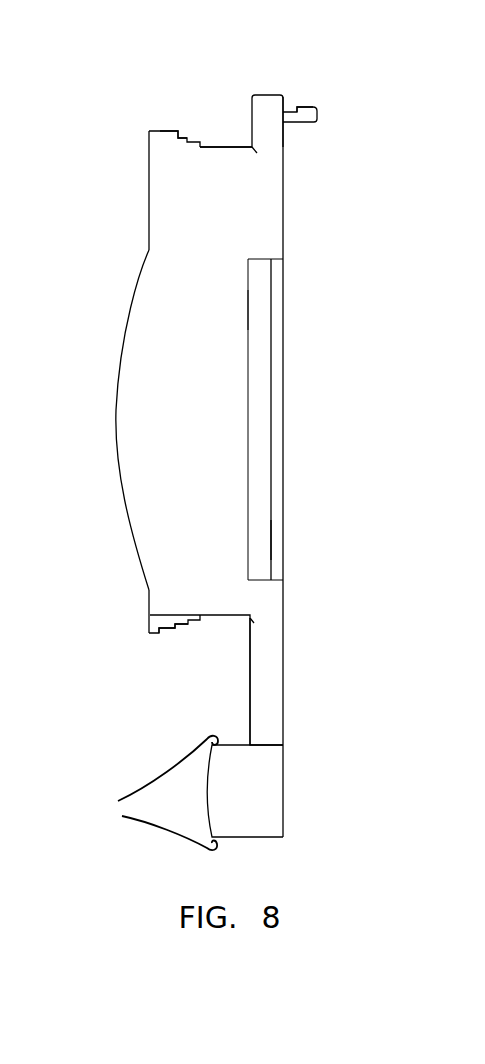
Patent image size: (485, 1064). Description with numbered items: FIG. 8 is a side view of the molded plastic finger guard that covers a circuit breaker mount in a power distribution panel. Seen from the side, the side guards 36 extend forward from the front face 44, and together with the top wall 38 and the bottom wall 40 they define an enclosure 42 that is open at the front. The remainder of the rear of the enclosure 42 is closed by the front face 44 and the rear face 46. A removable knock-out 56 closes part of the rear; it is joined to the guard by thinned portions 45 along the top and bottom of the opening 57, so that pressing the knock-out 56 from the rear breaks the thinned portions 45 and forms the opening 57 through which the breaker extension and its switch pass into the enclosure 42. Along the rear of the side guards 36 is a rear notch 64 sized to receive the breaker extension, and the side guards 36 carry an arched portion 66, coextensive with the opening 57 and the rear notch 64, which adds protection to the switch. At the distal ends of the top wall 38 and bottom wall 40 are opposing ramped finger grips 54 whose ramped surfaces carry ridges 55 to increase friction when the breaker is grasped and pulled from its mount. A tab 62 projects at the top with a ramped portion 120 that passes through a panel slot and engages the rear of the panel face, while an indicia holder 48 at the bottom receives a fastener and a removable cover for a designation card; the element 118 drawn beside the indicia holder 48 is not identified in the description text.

The side guards 36 is at (165, 407).
The top wall 38 is at (229, 146).
The bottom wall 40 is at (222, 617).
The enclosure 42 is at (111, 496).
The front face 44 is at (247, 146).
The thinned portions 45 is at (272, 259).
The rear face 46 is at (283, 188).
The indicia holder 48 is at (232, 809).
The ramped finger grips 54 is at (159, 130).
The ridges 55 is at (176, 133).
The knock-out 56 is at (276, 538).
The opening 57 is at (288, 575).
The tab 62 is at (297, 107).
The rear notch 64 is at (258, 297).
The arched portion 66 is at (133, 297).
The light guide 118 is at (148, 793).
The ramped portion 120 is at (302, 111).